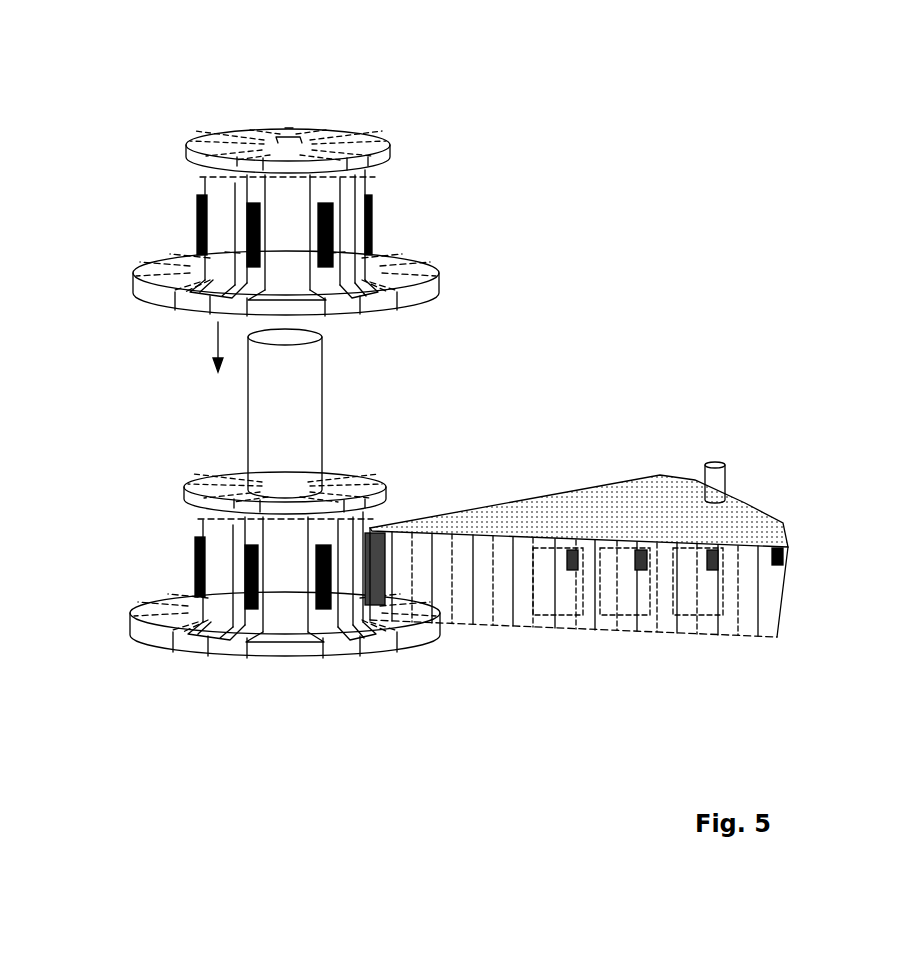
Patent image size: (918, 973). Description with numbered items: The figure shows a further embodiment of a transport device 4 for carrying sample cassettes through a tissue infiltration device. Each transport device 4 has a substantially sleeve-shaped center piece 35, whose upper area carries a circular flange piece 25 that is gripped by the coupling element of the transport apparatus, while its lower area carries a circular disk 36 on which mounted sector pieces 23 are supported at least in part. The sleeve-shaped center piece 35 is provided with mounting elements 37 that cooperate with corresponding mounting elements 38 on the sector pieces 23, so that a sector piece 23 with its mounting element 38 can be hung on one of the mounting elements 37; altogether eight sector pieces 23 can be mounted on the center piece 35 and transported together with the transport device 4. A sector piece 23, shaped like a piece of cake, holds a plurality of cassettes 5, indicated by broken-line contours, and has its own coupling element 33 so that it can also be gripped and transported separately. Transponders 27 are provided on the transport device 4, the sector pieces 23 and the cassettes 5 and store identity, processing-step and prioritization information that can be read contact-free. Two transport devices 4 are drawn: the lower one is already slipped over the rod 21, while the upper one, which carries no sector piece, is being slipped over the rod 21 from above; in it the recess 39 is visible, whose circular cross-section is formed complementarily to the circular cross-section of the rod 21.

The transport device 4 is at (274, 375).
The cassette 5 is at (562, 598).
The rod 21 is at (300, 438).
The sector piece 23 is at (602, 576).
The circular flange piece 25 is at (195, 140).
The transponder 27 is at (567, 550).
The coupling element 33 is at (717, 480).
The center piece 35 is at (223, 183).
The circular disk 36 is at (138, 287).
The mounting element 37 is at (200, 213).
The mounting element 38 is at (375, 532).
The recess 39 is at (297, 140).